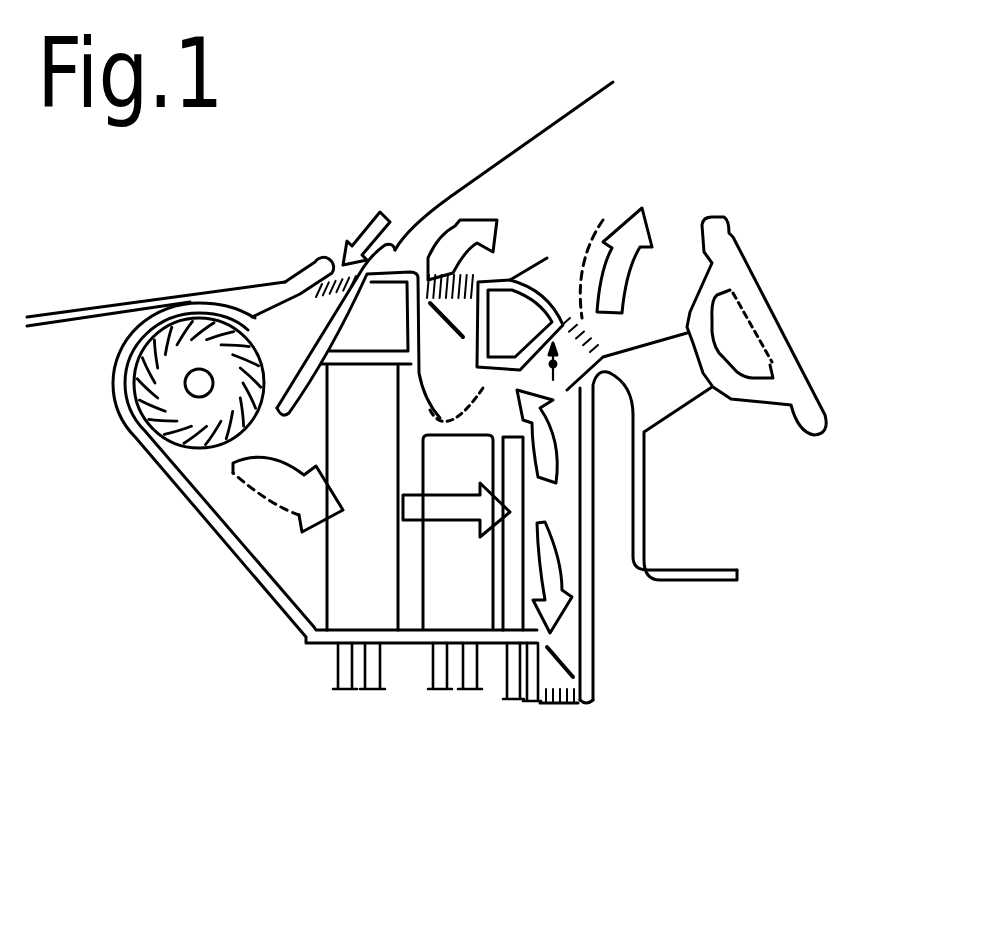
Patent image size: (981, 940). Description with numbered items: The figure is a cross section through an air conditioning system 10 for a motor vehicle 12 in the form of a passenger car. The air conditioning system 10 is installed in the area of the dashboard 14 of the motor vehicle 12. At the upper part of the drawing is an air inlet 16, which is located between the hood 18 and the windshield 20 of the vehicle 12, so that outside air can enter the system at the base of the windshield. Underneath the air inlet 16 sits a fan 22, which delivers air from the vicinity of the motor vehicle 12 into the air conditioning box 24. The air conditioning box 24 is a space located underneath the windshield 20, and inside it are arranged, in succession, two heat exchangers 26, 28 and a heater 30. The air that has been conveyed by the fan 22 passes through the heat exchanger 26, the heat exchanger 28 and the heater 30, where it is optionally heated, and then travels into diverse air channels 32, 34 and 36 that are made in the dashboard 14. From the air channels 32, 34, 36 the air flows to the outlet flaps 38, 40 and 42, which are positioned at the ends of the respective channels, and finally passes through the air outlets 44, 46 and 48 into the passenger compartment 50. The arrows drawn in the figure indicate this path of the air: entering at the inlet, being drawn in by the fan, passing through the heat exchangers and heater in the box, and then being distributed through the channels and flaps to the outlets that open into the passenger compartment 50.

The air conditioning system 10 is at (270, 606).
The motor vehicle 12 is at (377, 187).
The dashboard 14 is at (547, 262).
The air inlet 16 is at (328, 256).
The hood 18 is at (125, 292).
The windshield 20 is at (498, 137).
The fan 22 is at (197, 450).
The air conditioning box 24 is at (413, 618).
The heat exchanger 26 is at (347, 573).
The heat exchanger 28 is at (472, 592).
The heater 30 is at (511, 613).
The air channel 32 is at (466, 402).
The air channel 34 is at (570, 456).
The air channel 36 is at (567, 643).
The outlet flap 38 is at (460, 320).
The outlet flap 40 is at (625, 339).
The outlet flap 42 is at (560, 660).
The air outlet 44 is at (440, 228).
The air outlet 46 is at (603, 220).
The air outlet 48 is at (567, 710).
The passenger compartment 50 is at (888, 294).